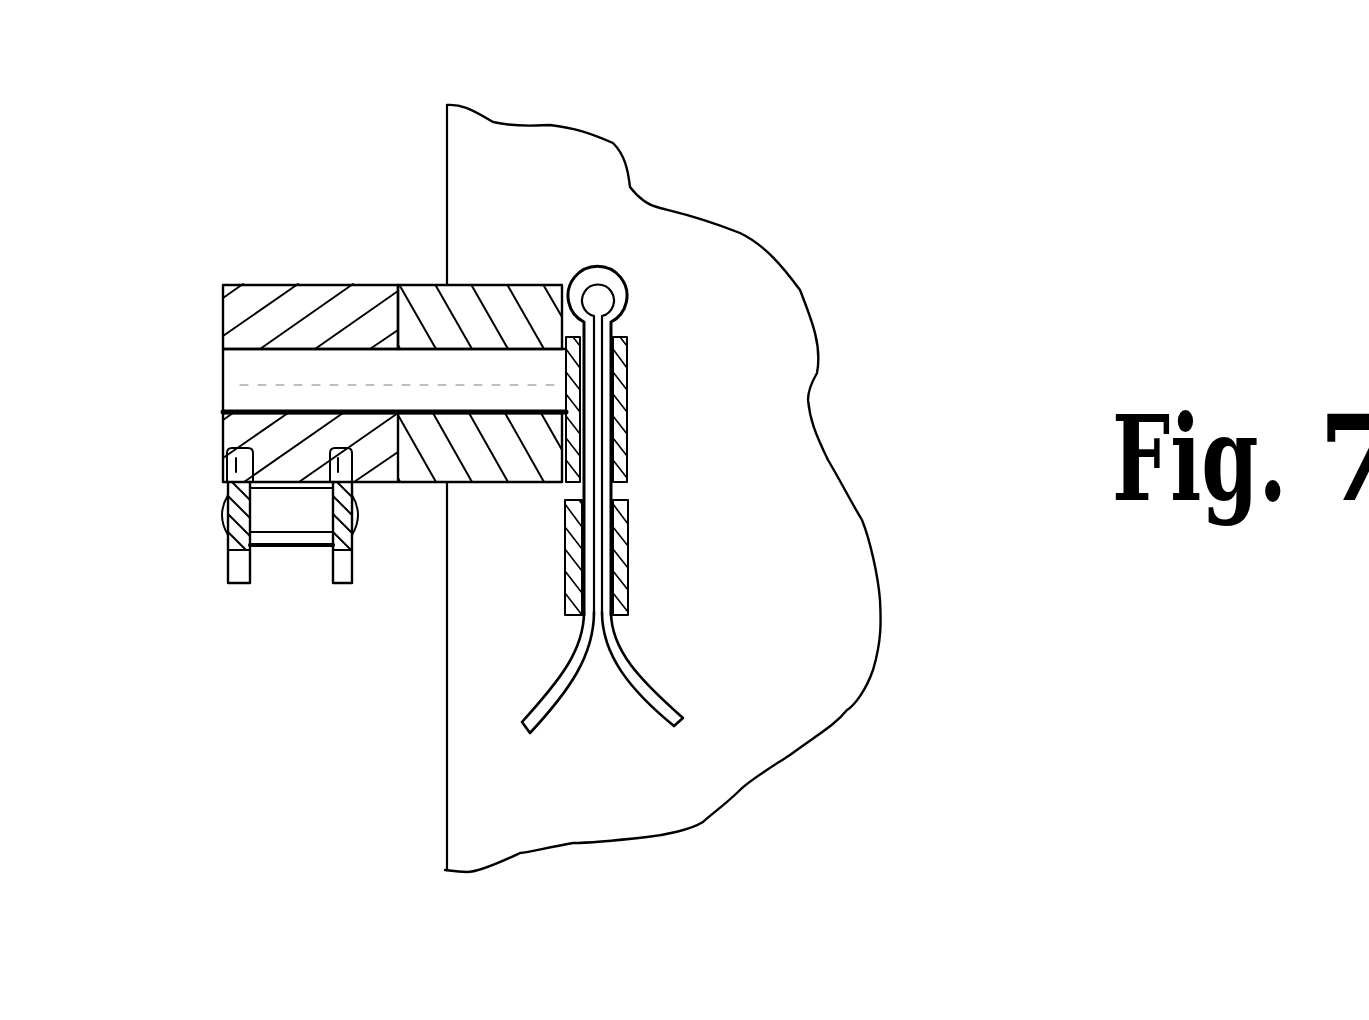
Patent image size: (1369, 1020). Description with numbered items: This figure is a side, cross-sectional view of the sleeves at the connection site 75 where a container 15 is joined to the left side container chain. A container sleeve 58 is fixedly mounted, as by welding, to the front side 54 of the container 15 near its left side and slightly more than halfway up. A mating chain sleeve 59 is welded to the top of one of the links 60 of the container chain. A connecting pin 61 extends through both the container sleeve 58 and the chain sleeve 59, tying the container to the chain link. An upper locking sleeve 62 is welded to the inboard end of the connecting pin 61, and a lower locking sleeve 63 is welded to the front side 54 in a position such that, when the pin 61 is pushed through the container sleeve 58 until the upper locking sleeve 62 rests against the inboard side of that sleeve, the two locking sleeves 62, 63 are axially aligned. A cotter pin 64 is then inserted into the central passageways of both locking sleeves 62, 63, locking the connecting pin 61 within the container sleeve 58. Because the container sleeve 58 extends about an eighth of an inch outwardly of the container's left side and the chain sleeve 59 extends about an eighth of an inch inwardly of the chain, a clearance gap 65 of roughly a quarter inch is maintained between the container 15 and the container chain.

The connection site 75 is at (305, 135).
The container 15 is at (447, 175).
The front side 54 is at (695, 255).
The chain sleeve 59 is at (283, 284).
The container sleeve 58 is at (512, 285).
The clearance gap 65 is at (407, 578).
The connecting pin 61 is at (225, 447).
The link 60 is at (232, 548).
The upper locking sleeve 62 is at (630, 400).
The lower locking sleeve 63 is at (630, 545).
The cotter pin 64 is at (625, 293).